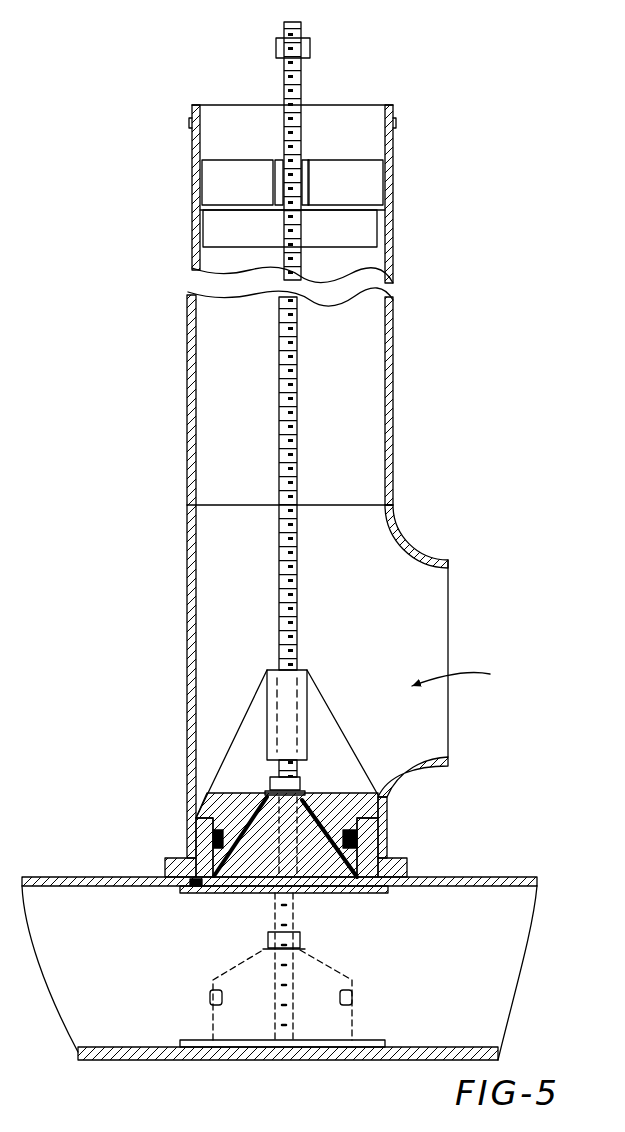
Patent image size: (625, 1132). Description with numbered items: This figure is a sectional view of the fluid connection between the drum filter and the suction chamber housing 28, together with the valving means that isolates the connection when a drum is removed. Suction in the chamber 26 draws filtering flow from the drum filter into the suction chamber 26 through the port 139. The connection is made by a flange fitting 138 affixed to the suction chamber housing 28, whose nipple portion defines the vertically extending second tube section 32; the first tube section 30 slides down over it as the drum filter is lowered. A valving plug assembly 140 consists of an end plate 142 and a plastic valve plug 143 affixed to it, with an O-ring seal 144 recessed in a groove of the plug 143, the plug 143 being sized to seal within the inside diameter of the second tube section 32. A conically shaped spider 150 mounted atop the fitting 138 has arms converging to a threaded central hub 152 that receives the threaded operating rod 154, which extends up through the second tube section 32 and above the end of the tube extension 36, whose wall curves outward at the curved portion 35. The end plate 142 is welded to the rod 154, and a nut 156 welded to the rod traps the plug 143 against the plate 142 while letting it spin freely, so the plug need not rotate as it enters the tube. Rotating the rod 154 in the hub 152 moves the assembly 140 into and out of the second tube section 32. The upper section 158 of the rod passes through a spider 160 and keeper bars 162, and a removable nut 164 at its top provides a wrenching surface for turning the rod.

The suction chamber 26 is at (547, 860).
The suction chamber housing 28 is at (490, 930).
The first tube section 30 is at (184, 835).
The second tube section 32 is at (386, 837).
The curved wall portion 35 is at (413, 543).
The tube extension 36 is at (452, 352).
The flange fitting 138 is at (196, 818).
The port 139 is at (200, 888).
The valving plug assembly 140 is at (250, 887).
The end plate 142 is at (352, 893).
The valve plug 143 is at (328, 813).
The O-ring seal 144 is at (221, 829).
The conically shaped spider 150 is at (370, 667).
The central hub 152 is at (300, 669).
The operating rod 154 is at (278, 565).
The nut 156 is at (304, 790).
The upper section 158 is at (303, 83).
The spider 160 is at (213, 172).
The keeper bars 162 is at (202, 231).
The removable nut 164 is at (273, 50).